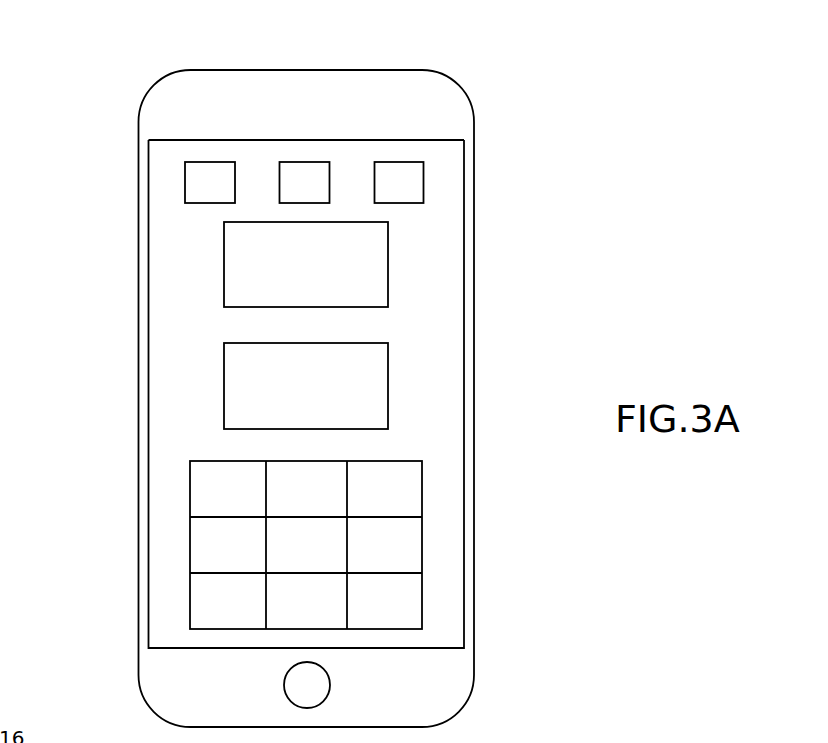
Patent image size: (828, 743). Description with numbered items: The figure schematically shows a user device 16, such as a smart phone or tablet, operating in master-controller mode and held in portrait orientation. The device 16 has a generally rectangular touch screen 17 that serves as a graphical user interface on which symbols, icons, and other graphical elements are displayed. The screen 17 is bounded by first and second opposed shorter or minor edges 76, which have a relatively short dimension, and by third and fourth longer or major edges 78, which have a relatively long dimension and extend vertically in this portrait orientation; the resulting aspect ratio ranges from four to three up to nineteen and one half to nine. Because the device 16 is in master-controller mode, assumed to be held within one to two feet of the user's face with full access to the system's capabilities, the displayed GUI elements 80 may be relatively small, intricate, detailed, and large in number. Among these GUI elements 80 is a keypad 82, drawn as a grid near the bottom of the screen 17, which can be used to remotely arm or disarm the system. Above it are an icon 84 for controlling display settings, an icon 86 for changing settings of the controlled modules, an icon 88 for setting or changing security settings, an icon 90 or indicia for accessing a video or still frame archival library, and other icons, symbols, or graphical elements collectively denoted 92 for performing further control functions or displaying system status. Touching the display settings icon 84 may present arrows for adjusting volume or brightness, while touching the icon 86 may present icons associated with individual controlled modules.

The user device 16 is at (474, 102).
The touch screen 17 is at (456, 255).
The minor edges 76 is at (318, 145).
The major edges 78 is at (152, 338).
The GUI elements 80 is at (425, 352).
The keypad 82 is at (412, 553).
The display settings icon 84 is at (227, 194).
The controlled module settings icon 86 is at (321, 194).
The security settings icon 88 is at (415, 194).
The archival library icon 90 is at (323, 274).
The other graphical elements 92 is at (323, 398).